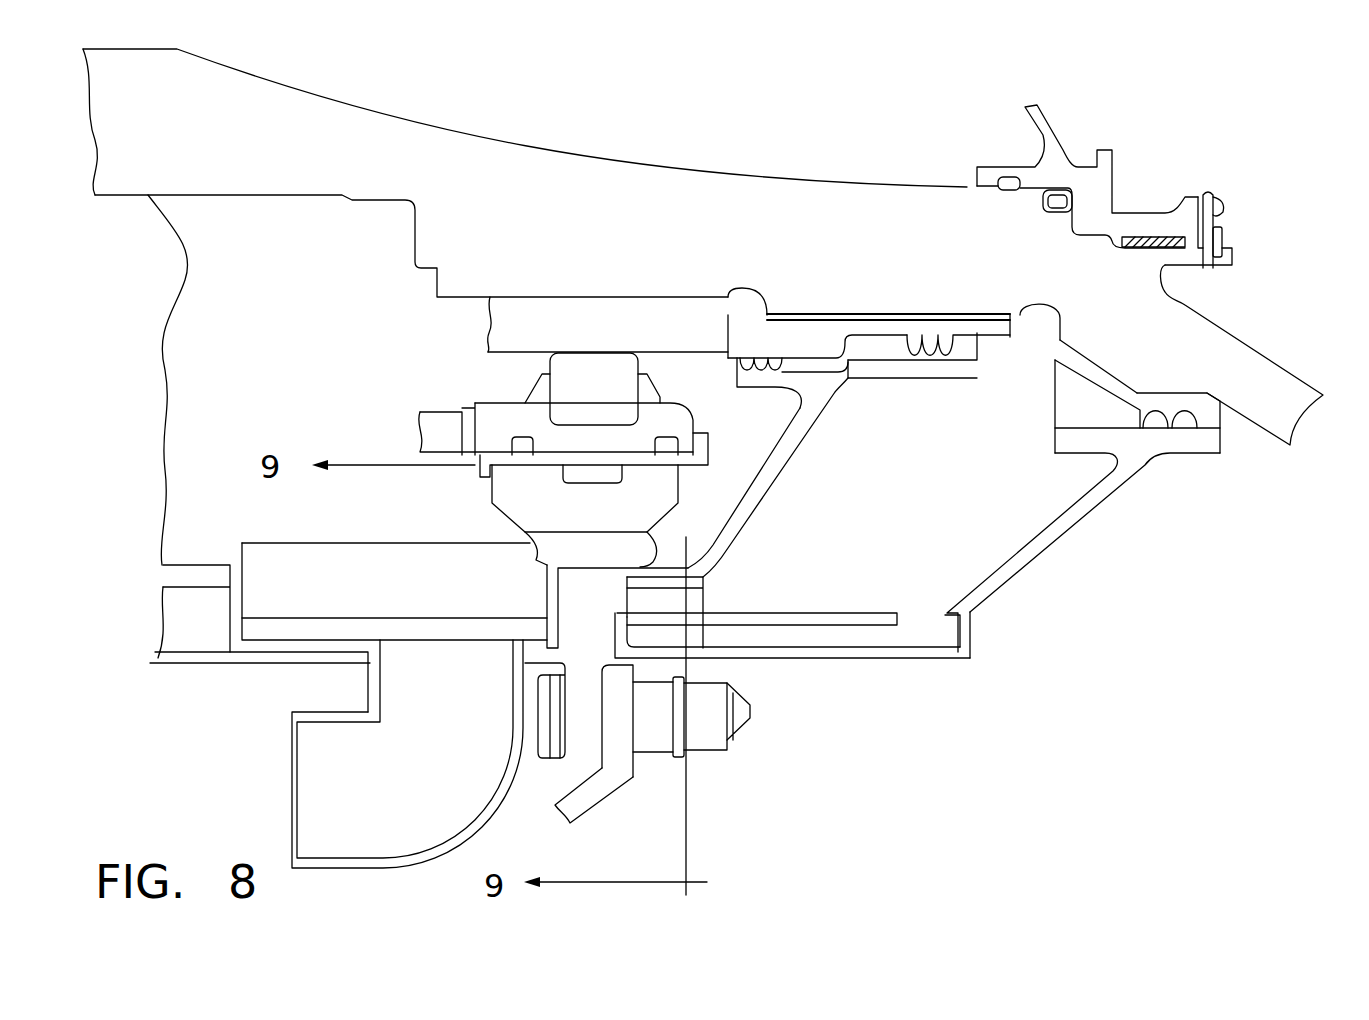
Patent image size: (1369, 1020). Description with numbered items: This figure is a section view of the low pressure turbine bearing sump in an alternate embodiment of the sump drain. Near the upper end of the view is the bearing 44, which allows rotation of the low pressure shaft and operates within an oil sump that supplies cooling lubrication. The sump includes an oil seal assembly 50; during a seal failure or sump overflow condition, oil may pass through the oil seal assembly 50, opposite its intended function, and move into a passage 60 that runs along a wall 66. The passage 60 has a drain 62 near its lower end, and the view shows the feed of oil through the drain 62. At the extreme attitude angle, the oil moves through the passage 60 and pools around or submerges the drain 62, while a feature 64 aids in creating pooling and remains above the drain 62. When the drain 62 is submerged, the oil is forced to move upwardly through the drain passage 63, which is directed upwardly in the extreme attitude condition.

The bearing 44 is at (670, 357).
The oil seal assembly 50 is at (993, 356).
The passage 60 is at (1000, 530).
The drain 62 is at (910, 611).
The drain passage 63 is at (820, 637).
The feature 64 is at (1028, 439).
The wall 66 is at (1032, 549).